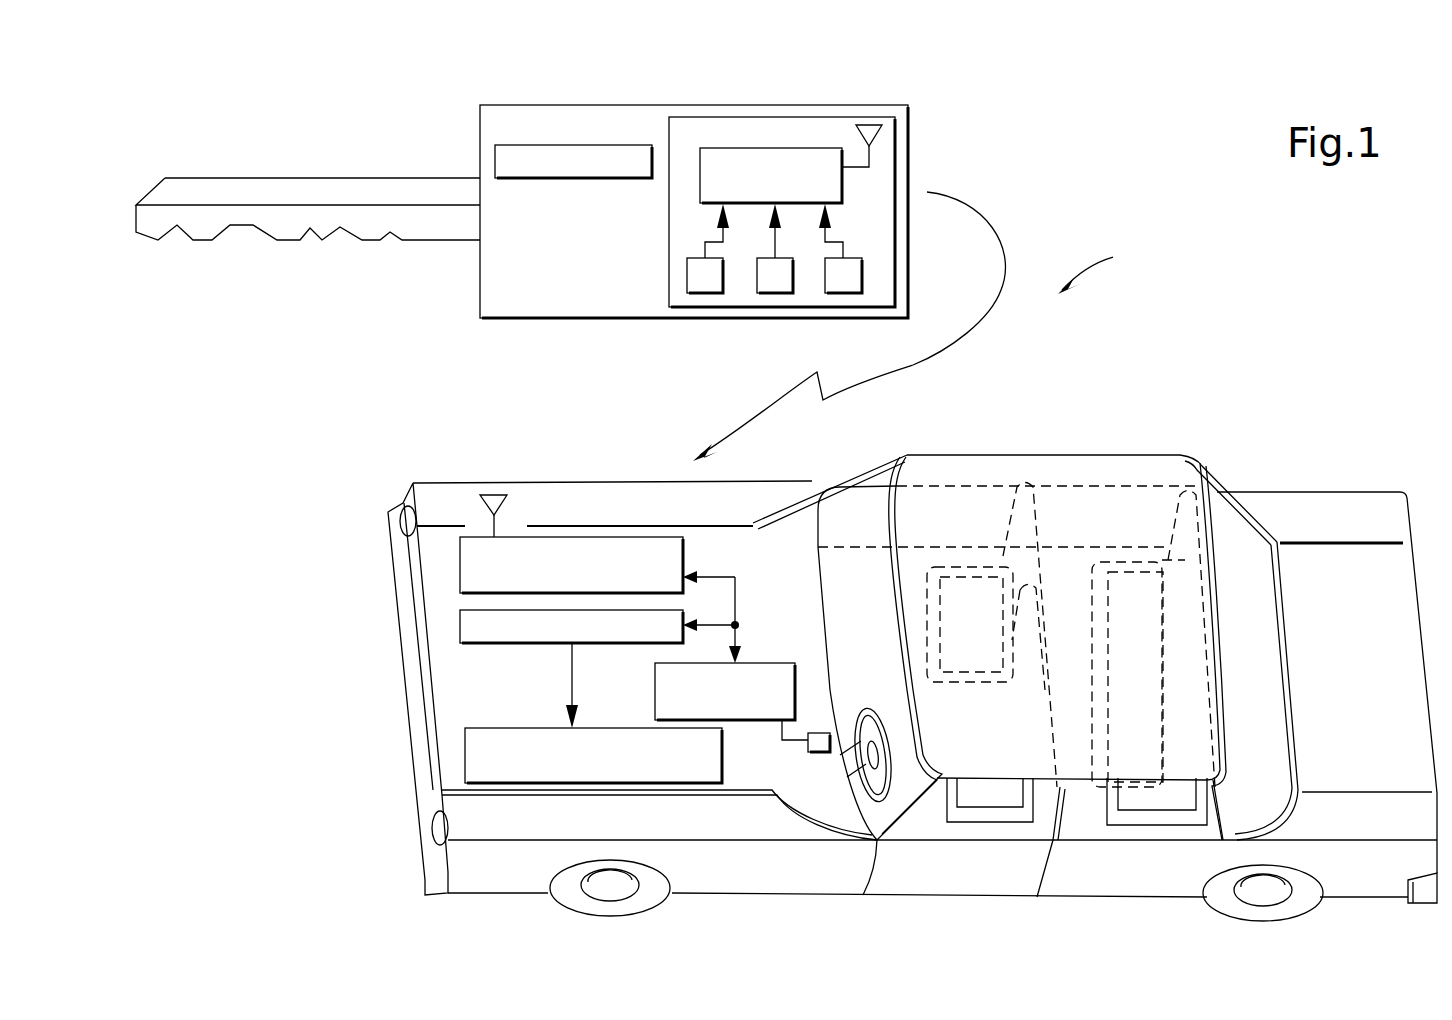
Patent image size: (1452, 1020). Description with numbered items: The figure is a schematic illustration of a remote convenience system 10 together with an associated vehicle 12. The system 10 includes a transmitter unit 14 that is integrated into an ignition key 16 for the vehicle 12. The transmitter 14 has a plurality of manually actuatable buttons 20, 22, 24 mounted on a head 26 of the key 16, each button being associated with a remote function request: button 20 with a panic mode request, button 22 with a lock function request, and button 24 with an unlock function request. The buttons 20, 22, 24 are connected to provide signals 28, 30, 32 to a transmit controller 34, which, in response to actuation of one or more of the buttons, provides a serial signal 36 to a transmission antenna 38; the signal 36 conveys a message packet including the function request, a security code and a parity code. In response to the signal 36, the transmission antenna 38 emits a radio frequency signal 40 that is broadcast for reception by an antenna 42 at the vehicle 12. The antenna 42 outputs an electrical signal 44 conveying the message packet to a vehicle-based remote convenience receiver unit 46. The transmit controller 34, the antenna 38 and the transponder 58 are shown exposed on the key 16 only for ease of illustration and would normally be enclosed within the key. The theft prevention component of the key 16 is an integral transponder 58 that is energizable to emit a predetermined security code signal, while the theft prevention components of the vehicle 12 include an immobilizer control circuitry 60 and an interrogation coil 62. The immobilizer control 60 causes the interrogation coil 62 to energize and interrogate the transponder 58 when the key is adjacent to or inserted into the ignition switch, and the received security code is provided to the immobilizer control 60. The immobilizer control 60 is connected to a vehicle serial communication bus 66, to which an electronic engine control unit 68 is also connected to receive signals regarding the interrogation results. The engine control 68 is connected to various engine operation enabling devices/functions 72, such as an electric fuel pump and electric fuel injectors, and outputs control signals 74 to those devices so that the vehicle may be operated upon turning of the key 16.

The remote convenience system 10 is at (1098, 270).
The vehicle 12 is at (1370, 497).
The transmitter unit 14 is at (678, 105).
The ignition key 16 is at (408, 186).
The button 20 is at (707, 293).
The button 22 is at (777, 293).
The button 24 is at (845, 293).
The head 26 is at (488, 287).
The signal 28 is at (715, 242).
The signal 30 is at (775, 240).
The signal 32 is at (830, 243).
The transmit controller 34 is at (842, 180).
The signal 36 is at (870, 160).
The transmission antenna 38 is at (868, 125).
The radio frequency signal 40 is at (943, 360).
The antenna 42 is at (492, 493).
The electrical signal 44 is at (500, 528).
The remote convenience receiver unit 46 is at (465, 578).
The transponder 58 is at (566, 145).
The immobilizer control circuitry 60 is at (779, 664).
The interrogation coil 62 is at (822, 752).
The vehicle serial communication bus 66 is at (733, 576).
The electronic engine control unit 68 is at (470, 645).
The engine operation enabling devices/functions 72 is at (488, 730).
The control signals 74 is at (572, 690).